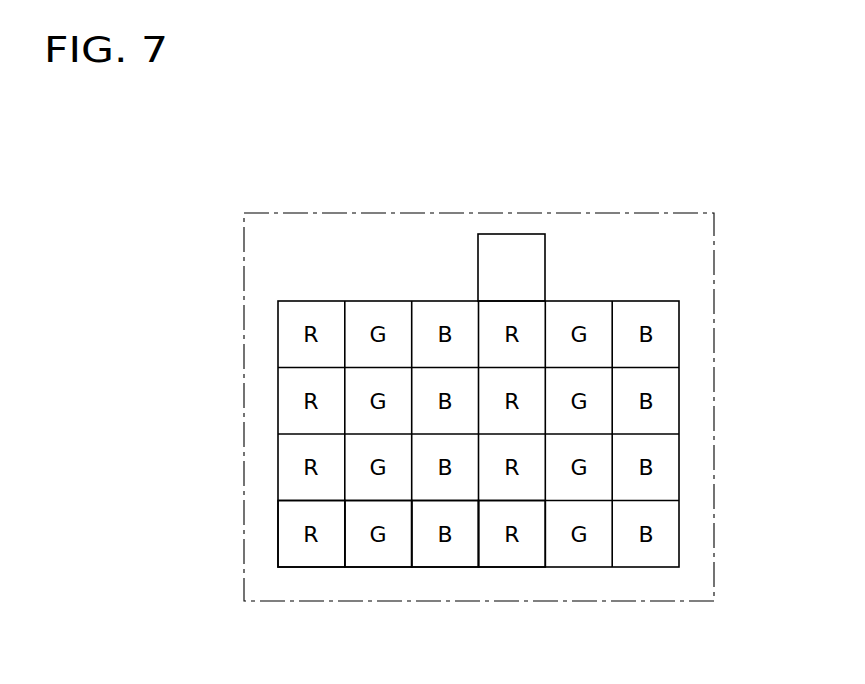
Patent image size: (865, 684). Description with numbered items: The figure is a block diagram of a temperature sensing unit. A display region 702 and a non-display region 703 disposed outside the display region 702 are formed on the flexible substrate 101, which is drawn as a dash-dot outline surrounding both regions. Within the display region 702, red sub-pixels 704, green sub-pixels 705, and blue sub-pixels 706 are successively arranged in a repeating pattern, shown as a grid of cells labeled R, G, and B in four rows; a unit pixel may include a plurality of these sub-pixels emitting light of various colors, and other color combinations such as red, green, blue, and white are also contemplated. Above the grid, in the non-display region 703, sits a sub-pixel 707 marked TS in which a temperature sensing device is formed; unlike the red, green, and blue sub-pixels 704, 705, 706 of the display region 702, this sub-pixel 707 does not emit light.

The flexible substrate 101 is at (714, 408).
The display region 702 is at (512, 567).
The non-display region 703 is at (642, 588).
The red sub-pixels 704 is at (311, 567).
The green sub-pixels 705 is at (378, 567).
The blue sub-pixels 706 is at (443, 567).
The sub-pixel 707 is at (512, 234).